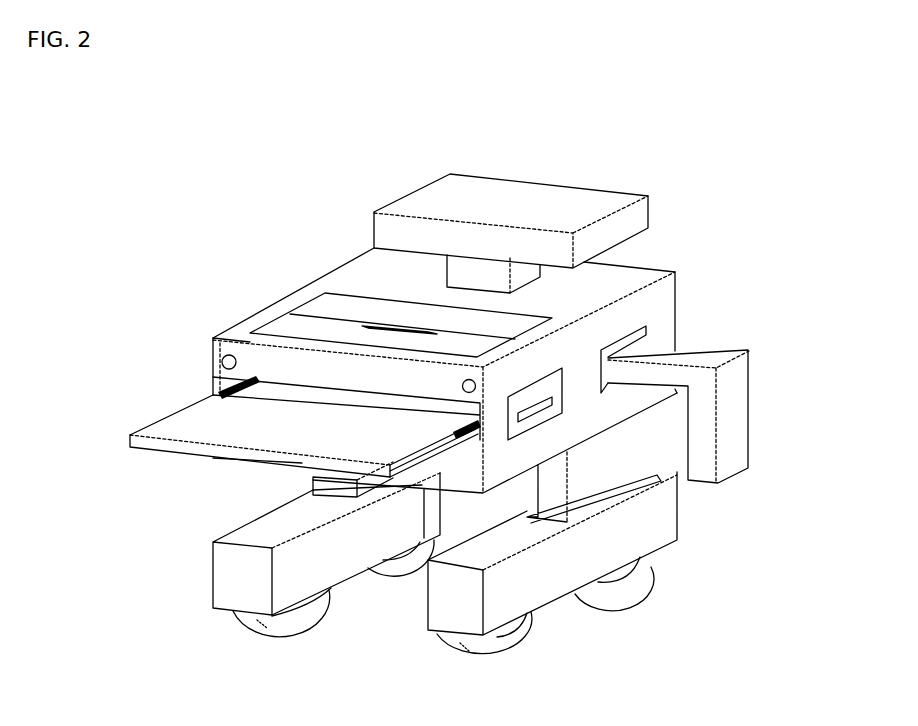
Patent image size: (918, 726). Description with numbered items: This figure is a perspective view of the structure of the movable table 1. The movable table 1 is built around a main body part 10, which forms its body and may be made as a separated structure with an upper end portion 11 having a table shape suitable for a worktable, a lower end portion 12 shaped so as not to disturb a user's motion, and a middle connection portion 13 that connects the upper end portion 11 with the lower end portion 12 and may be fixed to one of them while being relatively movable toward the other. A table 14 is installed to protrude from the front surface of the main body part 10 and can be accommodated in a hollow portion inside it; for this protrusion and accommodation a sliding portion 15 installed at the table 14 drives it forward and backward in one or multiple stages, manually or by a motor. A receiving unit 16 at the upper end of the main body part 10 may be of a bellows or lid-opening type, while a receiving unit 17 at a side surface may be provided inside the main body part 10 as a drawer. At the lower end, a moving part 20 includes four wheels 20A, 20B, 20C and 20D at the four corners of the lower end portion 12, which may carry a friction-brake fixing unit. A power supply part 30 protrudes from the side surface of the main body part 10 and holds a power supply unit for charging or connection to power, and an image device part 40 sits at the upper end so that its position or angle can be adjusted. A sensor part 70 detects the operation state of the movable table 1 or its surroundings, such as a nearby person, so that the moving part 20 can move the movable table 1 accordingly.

The movable table 1 is at (692, 179).
The main body part 10 is at (88, 425).
The upper end portion 11 is at (212, 378).
The lower end portion 12 is at (234, 566).
The middle connection portion 13 is at (316, 482).
The table 14 is at (277, 414).
The sliding portion 15 is at (242, 341).
The receiving unit 16 is at (320, 291).
The receiving unit 17 is at (553, 397).
The moving part 20 is at (505, 606).
The wheel 20A is at (517, 637).
The wheel 20B is at (619, 588).
The wheel 20C is at (297, 633).
The wheel 20D is at (395, 574).
The power supply part 30 is at (737, 417).
The image device part 40 is at (529, 200).
The sensor part 70 is at (219, 358).